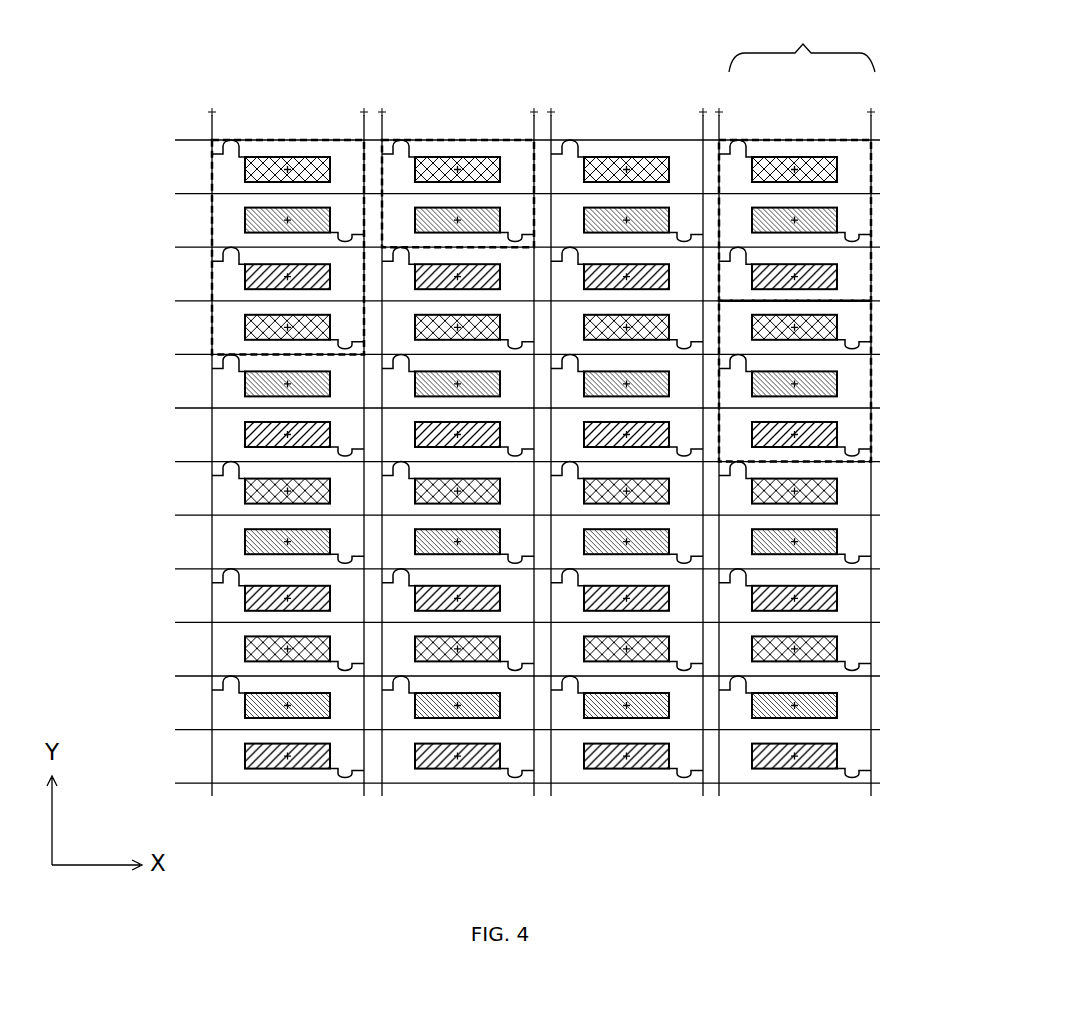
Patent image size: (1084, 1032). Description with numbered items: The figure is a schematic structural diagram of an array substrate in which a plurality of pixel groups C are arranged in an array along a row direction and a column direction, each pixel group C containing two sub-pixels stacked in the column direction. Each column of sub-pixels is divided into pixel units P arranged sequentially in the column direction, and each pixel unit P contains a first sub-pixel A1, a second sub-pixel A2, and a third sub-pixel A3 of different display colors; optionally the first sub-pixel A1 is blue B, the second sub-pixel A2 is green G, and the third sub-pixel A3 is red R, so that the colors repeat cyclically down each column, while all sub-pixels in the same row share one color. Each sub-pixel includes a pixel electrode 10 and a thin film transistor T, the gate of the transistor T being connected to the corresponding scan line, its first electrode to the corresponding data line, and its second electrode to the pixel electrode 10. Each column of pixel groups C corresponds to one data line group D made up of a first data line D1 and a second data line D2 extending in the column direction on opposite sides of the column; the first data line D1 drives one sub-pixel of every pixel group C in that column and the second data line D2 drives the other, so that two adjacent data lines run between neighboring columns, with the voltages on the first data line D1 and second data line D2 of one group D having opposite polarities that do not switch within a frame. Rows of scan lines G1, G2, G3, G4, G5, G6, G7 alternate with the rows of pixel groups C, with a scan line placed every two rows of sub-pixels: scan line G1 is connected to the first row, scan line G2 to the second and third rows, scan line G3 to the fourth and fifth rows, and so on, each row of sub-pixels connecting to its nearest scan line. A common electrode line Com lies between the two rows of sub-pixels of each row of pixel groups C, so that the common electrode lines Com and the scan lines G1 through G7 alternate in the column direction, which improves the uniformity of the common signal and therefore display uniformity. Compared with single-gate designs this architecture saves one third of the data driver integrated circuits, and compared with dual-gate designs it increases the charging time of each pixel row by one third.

The pixel electrode 10 is at (299, 158).
The thin film transistor T is at (246, 146).
The pixel group C is at (209, 267).
The pixel unit P is at (926, 356).
The data line group D is at (802, 42).
The first data line D1 is at (472, 435).
The second data line D2 is at (612, 435).
The first row of scan line G1 is at (509, 140).
The second row of scan line G2 is at (509, 247).
The third row of scan line G3 is at (509, 354).
The scan line G4 is at (509, 462).
The scan line G5 is at (509, 569).
The scan line G6 is at (509, 676).
The scan line G7 is at (509, 783).
The common electrode line Com is at (498, 462).
The first sub-pixel A1 is at (299, 409).
The second sub-pixel A2 is at (299, 463).
The third sub-pixel A3 is at (299, 516).
The blue B is at (837, 162).
The green G is at (837, 214).
The red R is at (837, 272).